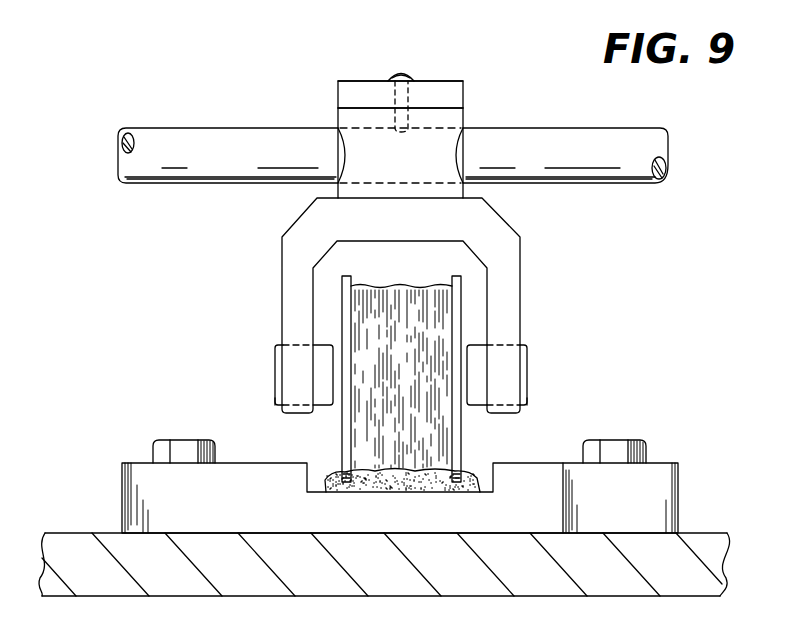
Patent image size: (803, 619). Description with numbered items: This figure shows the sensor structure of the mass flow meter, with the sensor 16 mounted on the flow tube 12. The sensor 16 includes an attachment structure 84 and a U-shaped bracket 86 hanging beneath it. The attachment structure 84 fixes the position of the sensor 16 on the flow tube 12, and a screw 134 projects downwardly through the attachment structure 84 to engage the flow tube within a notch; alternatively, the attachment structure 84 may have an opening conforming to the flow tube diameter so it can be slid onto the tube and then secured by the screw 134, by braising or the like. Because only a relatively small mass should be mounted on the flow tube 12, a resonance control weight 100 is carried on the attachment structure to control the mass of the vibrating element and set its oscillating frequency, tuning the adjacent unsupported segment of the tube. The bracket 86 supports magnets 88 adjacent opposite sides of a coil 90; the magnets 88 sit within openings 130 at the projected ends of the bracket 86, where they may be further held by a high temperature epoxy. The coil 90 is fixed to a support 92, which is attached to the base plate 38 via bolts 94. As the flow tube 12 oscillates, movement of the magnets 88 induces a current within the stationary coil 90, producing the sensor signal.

The flow tube 12 is at (228, 136).
The sensor 16 is at (568, 299).
The base plate 38 is at (697, 540).
The attachment structure 84 is at (453, 117).
The U-shaped bracket 86 is at (497, 230).
The magnets 88 is at (323, 400).
The coil 90 is at (391, 300).
The support 92 is at (668, 468).
The bolts 94 is at (163, 440).
The resonance control weight 100 is at (437, 92).
The openings 130 is at (273, 410).
The screw 134 is at (401, 73).